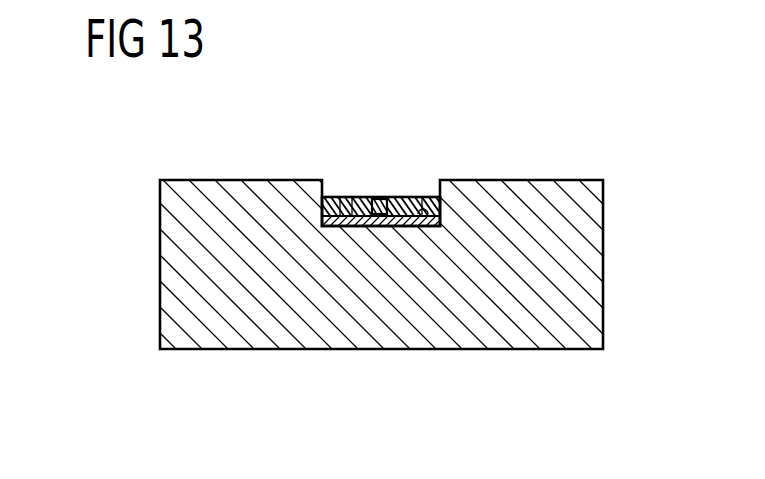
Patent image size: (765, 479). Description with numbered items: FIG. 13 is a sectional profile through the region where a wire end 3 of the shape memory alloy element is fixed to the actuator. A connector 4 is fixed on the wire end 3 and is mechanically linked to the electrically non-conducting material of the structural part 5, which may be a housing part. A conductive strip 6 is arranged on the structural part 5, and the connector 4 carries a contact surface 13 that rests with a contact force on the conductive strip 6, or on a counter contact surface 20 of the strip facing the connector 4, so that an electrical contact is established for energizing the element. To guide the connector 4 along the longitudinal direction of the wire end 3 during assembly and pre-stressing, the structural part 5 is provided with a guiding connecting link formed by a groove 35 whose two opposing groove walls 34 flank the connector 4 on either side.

The wire end 3 is at (378, 197).
The connector 4 is at (358, 197).
The structural part 5 is at (552, 270).
The conductive strip 6 is at (383, 227).
The contact surface 13 is at (347, 227).
The counter contact surface 20 is at (425, 227).
The groove wall 34 is at (343, 197).
The groove 35 is at (404, 171).